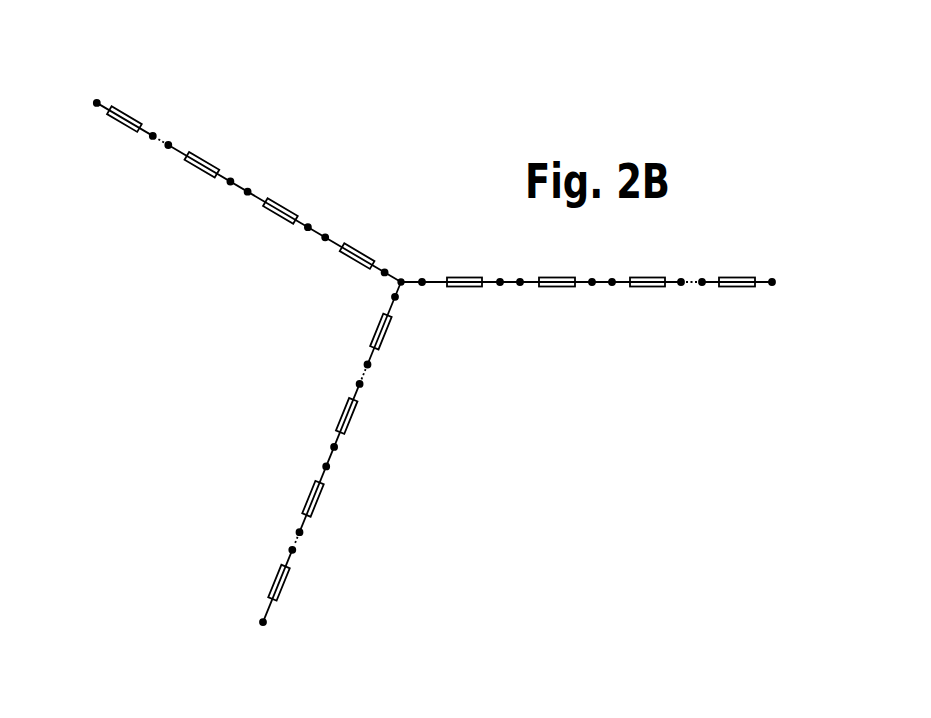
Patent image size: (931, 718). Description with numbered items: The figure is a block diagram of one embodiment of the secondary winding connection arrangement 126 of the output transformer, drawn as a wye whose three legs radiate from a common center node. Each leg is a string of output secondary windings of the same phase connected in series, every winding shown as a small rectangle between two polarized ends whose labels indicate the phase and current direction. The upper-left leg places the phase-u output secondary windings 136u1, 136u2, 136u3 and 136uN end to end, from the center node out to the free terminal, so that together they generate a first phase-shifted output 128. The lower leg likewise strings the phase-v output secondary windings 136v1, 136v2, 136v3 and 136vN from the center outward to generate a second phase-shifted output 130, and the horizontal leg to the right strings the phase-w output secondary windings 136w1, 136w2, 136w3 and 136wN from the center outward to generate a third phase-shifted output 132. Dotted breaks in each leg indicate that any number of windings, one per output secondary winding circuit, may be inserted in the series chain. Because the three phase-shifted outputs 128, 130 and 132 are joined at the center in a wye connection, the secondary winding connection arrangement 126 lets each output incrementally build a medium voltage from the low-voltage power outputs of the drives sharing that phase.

The first phase-shifted output 128 is at (96, 92).
The second phase-shifted output 130 is at (248, 620).
The third phase-shifted output 132 is at (793, 284).
The secondary winding connection arrangement 126 is at (408, 194).
The output secondary winding 136u1 is at (365, 252).
The output secondary winding 136u2 is at (287, 205).
The output secondary winding 136u3 is at (207, 159).
The output secondary winding 136uN is at (128, 112).
The output secondary winding 136w1 is at (469, 277).
The output secondary winding 136w2 is at (558, 277).
The output secondary winding 136w3 is at (649, 277).
The output secondary winding 136wN is at (740, 277).
The output secondary winding 136v1 is at (389, 330).
The output secondary winding 136v2 is at (355, 412).
The output secondary winding 136v3 is at (322, 497).
The output secondary winding 136vN is at (287, 582).